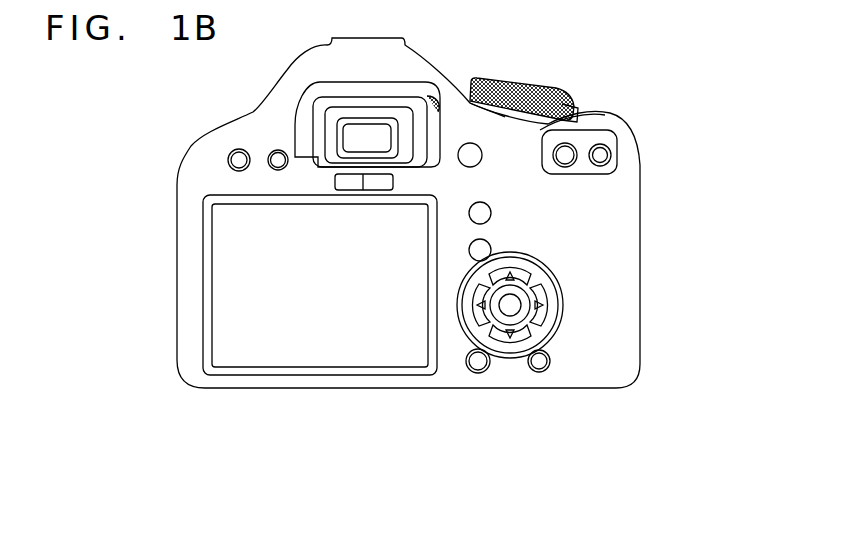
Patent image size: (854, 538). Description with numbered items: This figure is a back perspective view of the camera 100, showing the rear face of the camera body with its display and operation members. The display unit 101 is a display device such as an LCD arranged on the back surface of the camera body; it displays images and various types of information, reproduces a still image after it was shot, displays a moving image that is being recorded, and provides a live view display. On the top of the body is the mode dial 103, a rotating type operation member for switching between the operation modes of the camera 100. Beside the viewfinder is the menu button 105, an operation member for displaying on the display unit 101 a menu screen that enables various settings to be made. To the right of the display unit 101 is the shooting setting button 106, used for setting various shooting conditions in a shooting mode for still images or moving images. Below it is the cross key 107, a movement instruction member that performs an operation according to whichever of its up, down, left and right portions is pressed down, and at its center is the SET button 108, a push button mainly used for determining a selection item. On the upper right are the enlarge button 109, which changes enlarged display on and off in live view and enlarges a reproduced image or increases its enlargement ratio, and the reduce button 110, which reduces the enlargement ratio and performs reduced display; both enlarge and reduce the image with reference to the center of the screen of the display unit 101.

The camera 100 is at (397, 392).
The display unit 101 is at (220, 242).
The mode dial 103 is at (512, 82).
The menu button 105 is at (228, 160).
The shooting setting button 106 is at (488, 215).
The cross key 107 is at (540, 318).
The SET button 108 is at (512, 303).
The enlarge button 109 is at (603, 154).
The reduce button 110 is at (567, 152).